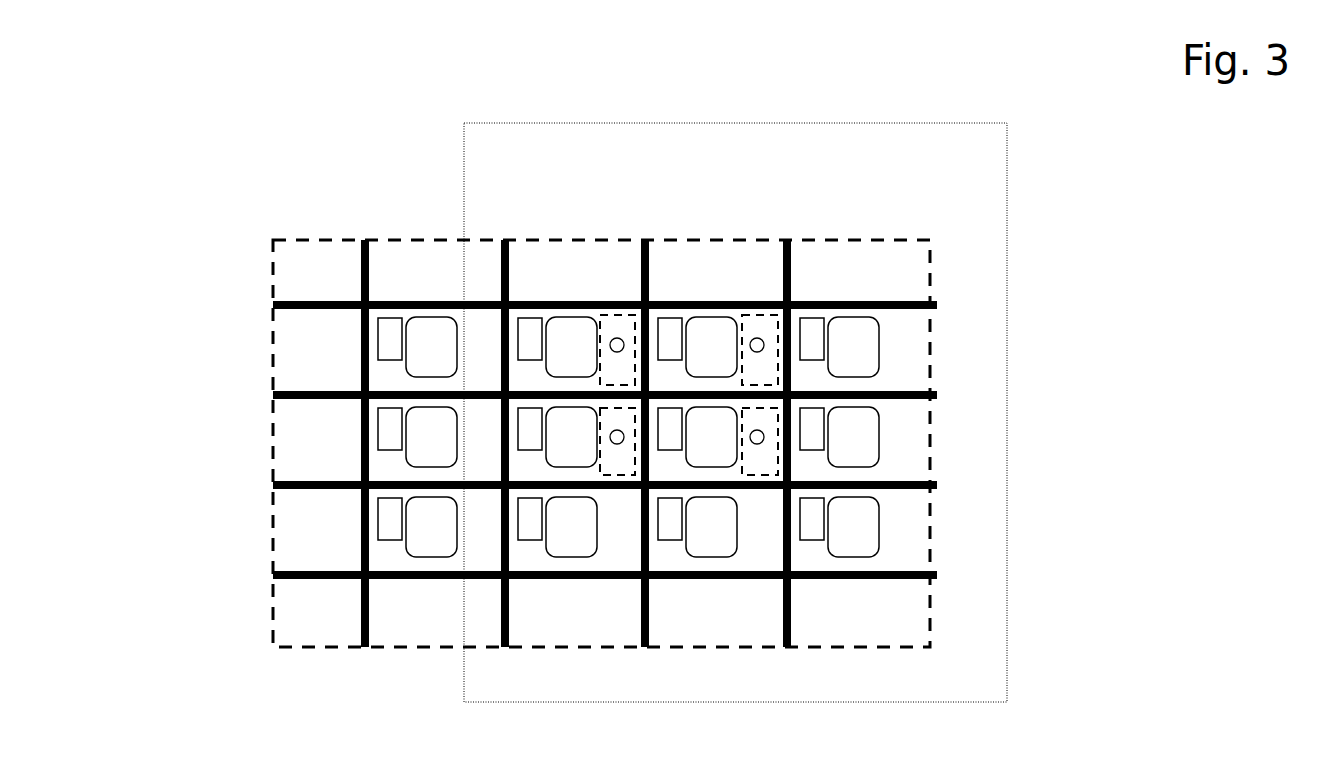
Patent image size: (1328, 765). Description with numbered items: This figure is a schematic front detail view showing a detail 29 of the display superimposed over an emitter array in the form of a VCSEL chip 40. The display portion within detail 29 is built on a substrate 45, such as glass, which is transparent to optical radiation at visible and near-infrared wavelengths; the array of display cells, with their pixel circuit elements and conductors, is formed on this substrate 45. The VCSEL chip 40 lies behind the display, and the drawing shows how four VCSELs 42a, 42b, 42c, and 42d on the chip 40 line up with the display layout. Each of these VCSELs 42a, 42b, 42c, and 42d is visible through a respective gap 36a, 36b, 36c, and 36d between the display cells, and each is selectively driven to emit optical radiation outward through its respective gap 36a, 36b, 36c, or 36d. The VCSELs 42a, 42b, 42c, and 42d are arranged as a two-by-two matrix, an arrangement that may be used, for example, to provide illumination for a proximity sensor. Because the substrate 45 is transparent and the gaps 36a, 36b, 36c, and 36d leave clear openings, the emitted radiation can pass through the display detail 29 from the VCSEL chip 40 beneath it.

The detail 29 is at (272, 343).
The gap 36a is at (613, 312).
The gap 36b is at (630, 405).
The gap 36c is at (757, 312).
The gap 36d is at (741, 405).
The VCSEL chip 40 is at (965, 655).
The VCSEL 42a is at (624, 342).
The VCSEL 42b is at (623, 434).
The VCSEL 42c is at (764, 343).
The VCSEL 42d is at (764, 435).
The substrate 45 is at (430, 622).